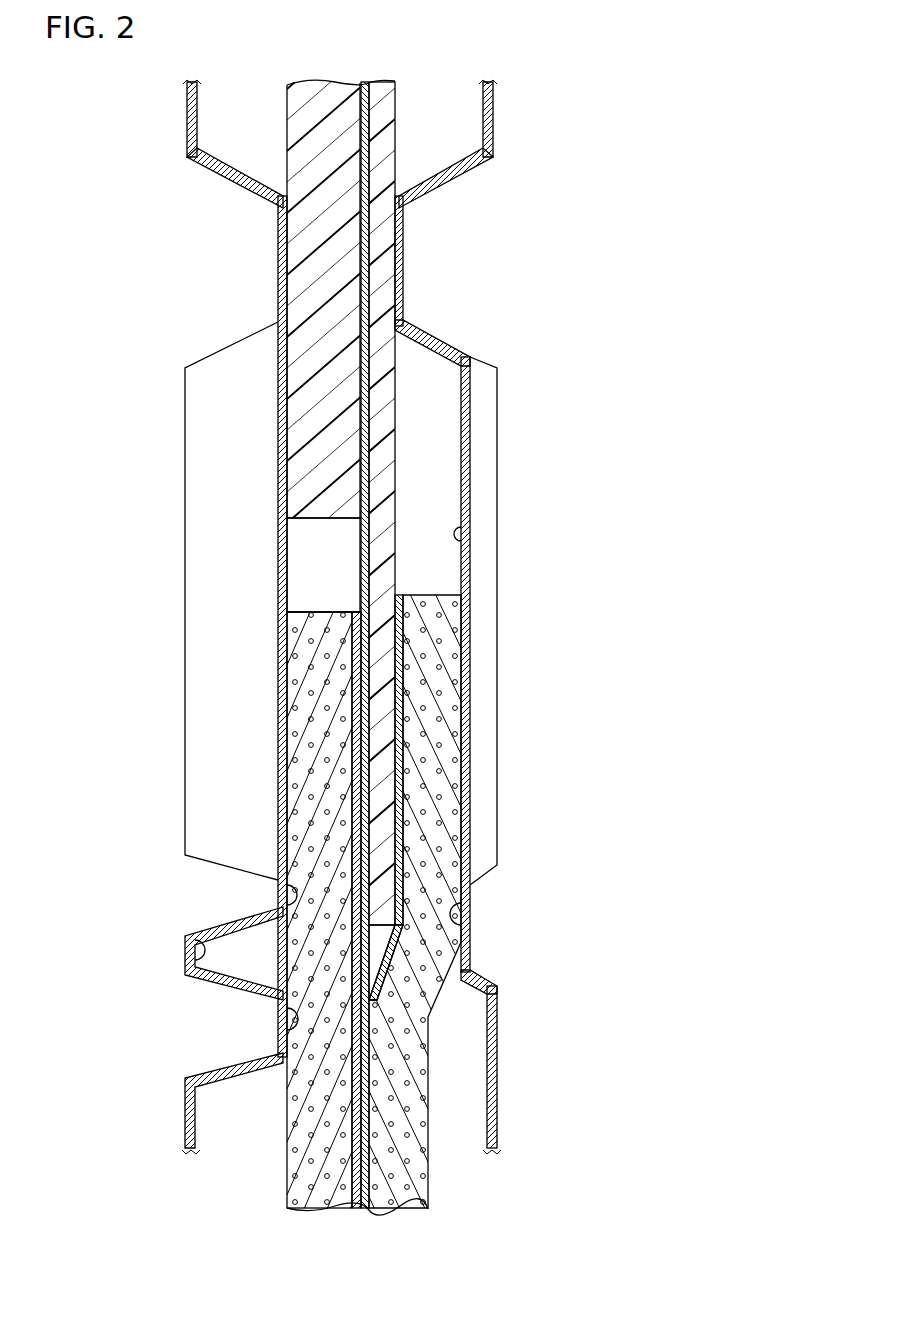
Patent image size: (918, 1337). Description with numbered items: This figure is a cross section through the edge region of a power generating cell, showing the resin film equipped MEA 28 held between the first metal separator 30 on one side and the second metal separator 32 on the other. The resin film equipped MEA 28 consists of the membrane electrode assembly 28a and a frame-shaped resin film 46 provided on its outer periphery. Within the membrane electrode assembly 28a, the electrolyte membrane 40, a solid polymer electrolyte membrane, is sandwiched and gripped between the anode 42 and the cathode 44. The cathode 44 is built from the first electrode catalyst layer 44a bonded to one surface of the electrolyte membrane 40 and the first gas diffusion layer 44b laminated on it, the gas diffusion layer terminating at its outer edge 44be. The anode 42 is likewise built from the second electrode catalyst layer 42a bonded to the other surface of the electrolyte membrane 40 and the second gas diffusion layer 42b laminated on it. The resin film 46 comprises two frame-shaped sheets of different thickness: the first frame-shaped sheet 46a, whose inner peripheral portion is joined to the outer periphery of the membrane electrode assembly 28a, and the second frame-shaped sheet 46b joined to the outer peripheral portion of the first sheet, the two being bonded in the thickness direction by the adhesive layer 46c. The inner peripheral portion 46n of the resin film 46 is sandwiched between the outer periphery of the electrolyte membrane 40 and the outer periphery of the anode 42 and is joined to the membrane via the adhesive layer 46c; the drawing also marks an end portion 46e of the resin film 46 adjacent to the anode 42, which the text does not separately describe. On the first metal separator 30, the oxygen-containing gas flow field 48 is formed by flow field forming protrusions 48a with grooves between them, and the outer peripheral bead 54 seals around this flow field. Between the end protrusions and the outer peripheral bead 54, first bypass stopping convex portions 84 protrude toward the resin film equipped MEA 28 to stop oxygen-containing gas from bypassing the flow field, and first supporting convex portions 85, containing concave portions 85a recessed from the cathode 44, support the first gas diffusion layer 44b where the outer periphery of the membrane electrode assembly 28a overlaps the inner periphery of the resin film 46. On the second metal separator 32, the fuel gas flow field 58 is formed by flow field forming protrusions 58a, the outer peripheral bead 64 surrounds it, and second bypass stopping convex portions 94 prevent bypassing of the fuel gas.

The resin film equipped MEA 28 is at (320, 70).
The membrane electrode assembly 28a is at (442, 1017).
The first metal separator 30 is at (186, 123).
The second metal separator 32 is at (497, 108).
The outer peripheral bead 54 is at (232, 170).
The outer peripheral bead 64 is at (437, 170).
The resin film 46 is at (398, 92).
The first frame-shaped sheet 46a is at (383, 447).
The second frame-shaped sheet 46b is at (305, 447).
The adhesive layer 46c is at (368, 487).
The inner peripheral portion 46n is at (383, 787).
The tapered end of separator 46e is at (376, 930).
The second bypass stopping convex portions 94 is at (468, 531).
The first bypass stopping convex portions 84 is at (285, 574).
The cathode 44 is at (120, 652).
The first electrode catalyst layer 44a is at (352, 678).
The first gas diffusion layer 44b is at (305, 697).
The outer edge of the first gas diffusion layer 44be is at (310, 612).
The anode 42 is at (563, 672).
The second electrode catalyst layer 42a is at (400, 690).
The second gas diffusion layer 42b is at (440, 730).
The first supporting convex portions 85 is at (279, 882).
The concave portions 85a is at (200, 937).
The oxygen-containing gas flow field 48 is at (215, 1110).
The flow field forming protrusions 48a is at (280, 1027).
The fuel gas flow field 58 is at (470, 1105).
The flow field forming protrusions 58a is at (466, 913).
The electrolyte membrane 40 is at (360, 1174).